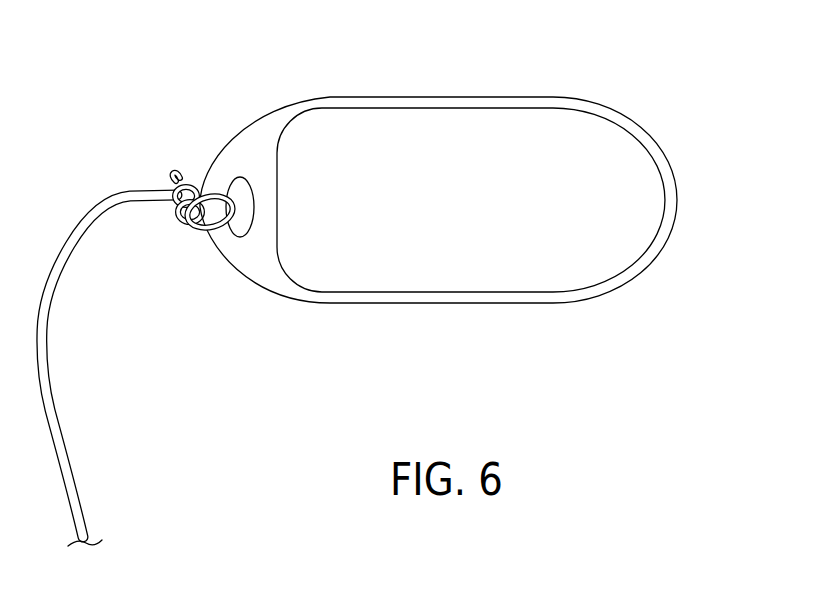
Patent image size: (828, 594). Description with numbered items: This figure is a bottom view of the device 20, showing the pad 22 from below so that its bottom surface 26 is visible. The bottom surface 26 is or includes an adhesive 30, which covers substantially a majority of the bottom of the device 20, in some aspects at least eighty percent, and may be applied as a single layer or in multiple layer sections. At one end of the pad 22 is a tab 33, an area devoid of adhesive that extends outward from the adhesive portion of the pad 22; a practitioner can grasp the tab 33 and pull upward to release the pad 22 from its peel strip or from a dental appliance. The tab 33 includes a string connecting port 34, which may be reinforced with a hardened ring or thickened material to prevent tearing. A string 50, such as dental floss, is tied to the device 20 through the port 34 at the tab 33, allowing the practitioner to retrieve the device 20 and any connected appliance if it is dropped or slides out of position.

The device 20 is at (427, 186).
The pad 22 is at (175, 57).
The bottom surface 26 is at (267, 250).
The adhesive 30 is at (540, 130).
The tab 33 is at (253, 158).
The string connecting port 34 is at (233, 170).
The string 50 is at (60, 441).